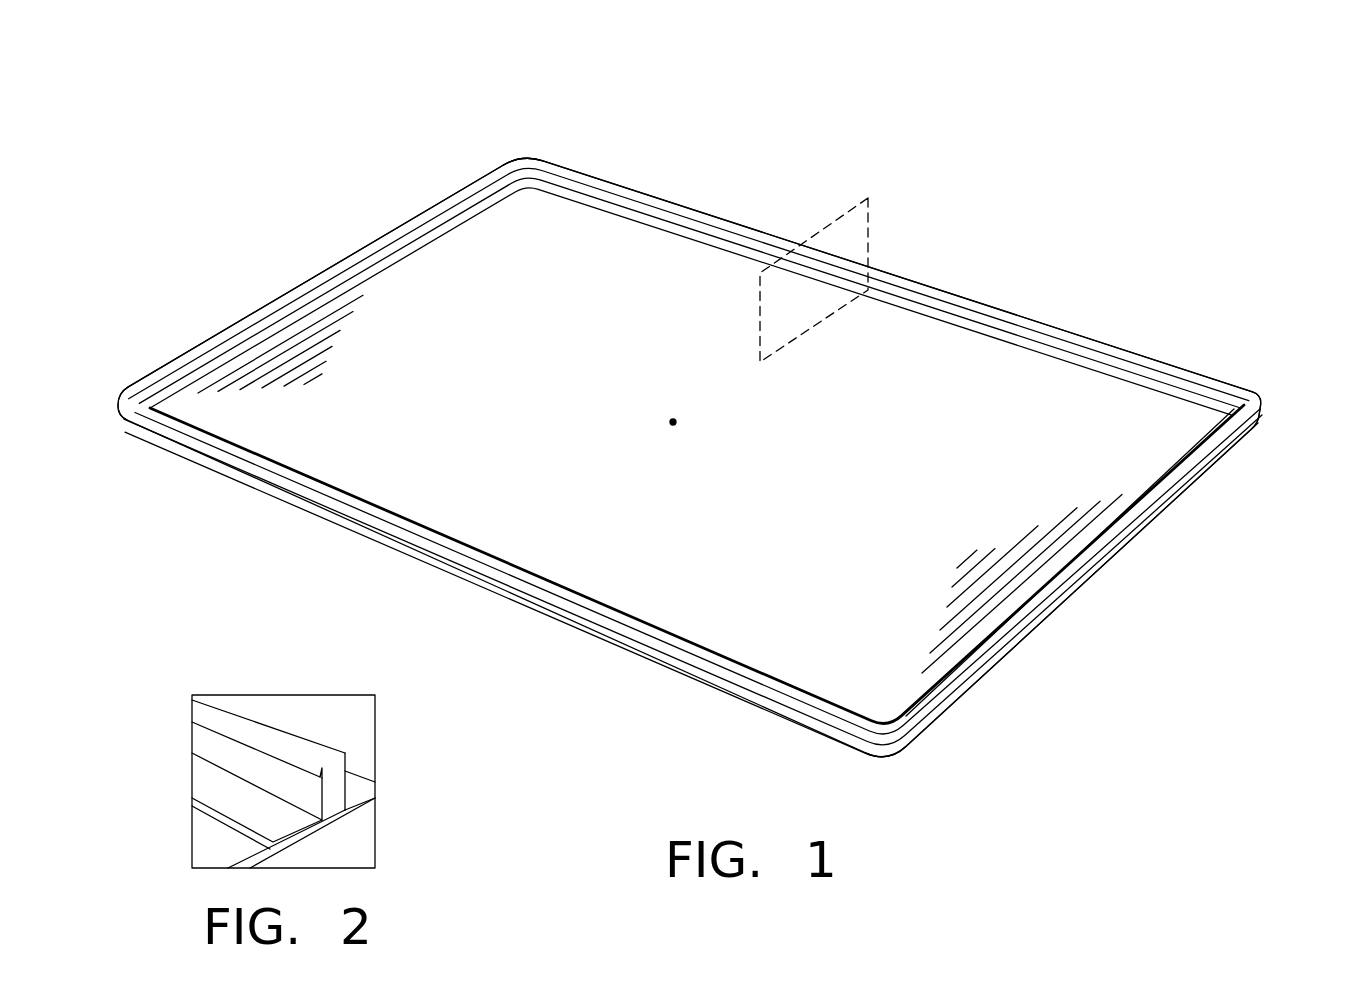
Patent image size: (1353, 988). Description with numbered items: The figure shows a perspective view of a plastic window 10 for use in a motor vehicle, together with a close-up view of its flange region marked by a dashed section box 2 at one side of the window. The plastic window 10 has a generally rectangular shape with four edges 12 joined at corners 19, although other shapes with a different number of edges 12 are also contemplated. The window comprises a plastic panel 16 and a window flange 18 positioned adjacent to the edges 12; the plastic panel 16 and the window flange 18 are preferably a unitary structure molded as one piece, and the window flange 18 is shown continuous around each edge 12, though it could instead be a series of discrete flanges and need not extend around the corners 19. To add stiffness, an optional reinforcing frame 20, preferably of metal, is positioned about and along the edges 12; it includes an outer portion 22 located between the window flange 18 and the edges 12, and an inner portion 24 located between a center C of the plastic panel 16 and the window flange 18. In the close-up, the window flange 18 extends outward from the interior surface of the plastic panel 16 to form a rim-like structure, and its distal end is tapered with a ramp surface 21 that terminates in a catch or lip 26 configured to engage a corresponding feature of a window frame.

In FIG. 1, the plastic window 10 is at (695, 130).
In FIG. 1, the edges 12 is at (246, 316).
In FIG. 1, the plastic panel 16 is at (387, 323).
In FIG. 2, the plastic panel 16 is at (222, 837).
In FIG. 1, the window flange 18 is at (264, 466).
In FIG. 2, the window flange 18 is at (348, 762).
In FIG. 1, the corners 19 is at (520, 153).
In FIG. 1, the reinforcing frame 20 is at (1133, 537).
In FIG. 2, the reinforcing frame 20 is at (362, 807).
In FIG. 2, the ramp surface 21 is at (218, 725).
In FIG. 1, the outer portion 22 is at (1062, 588).
In FIG. 2, the outer portion 22 is at (357, 793).
In FIG. 1, the inner portion 24 is at (1074, 350).
In FIG. 2, the inner portion 24 is at (210, 785).
In FIG. 2, the catch or lip 26 is at (322, 772).
In FIG. 1, the section indicator for FIG. 2 is at (810, 267).
In FIG. 1, the center C is at (683, 408).